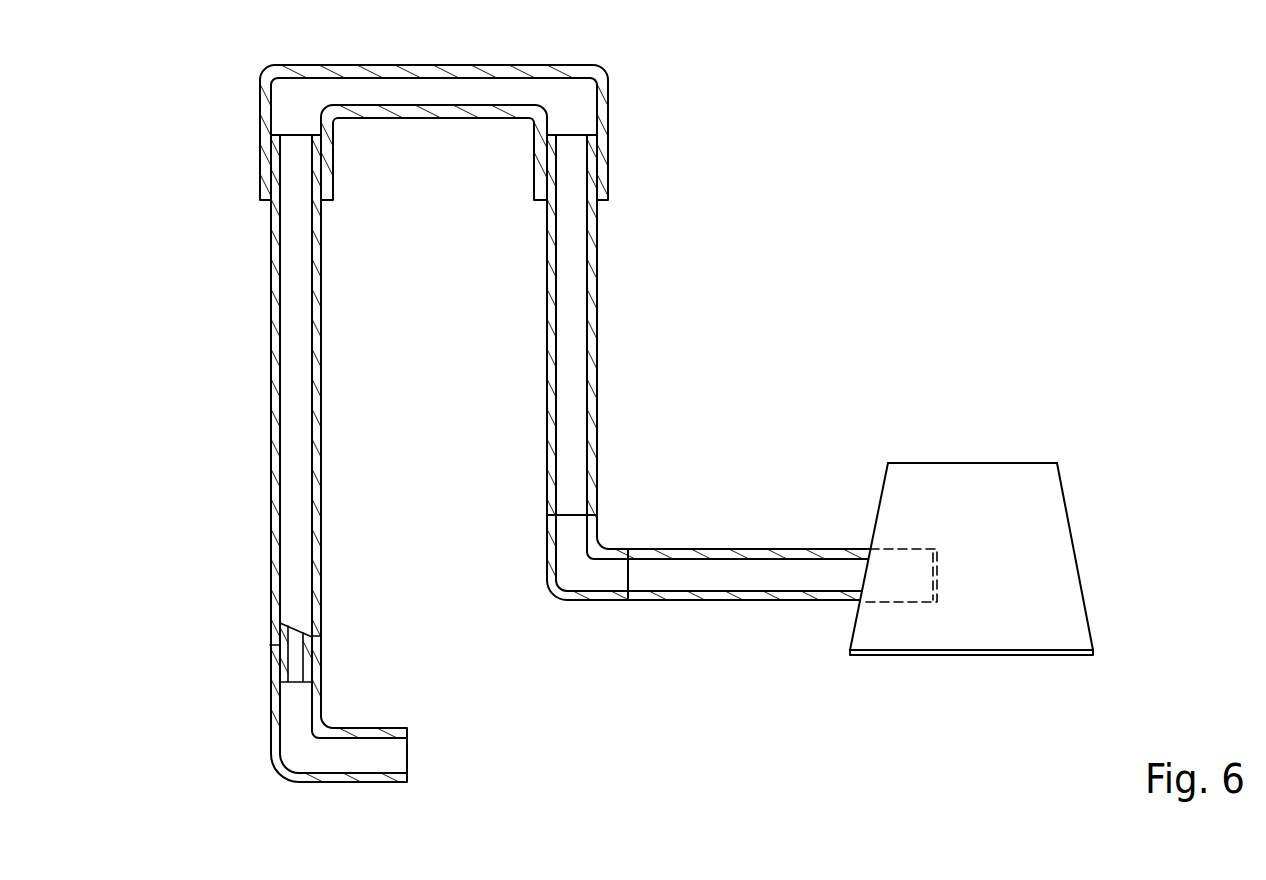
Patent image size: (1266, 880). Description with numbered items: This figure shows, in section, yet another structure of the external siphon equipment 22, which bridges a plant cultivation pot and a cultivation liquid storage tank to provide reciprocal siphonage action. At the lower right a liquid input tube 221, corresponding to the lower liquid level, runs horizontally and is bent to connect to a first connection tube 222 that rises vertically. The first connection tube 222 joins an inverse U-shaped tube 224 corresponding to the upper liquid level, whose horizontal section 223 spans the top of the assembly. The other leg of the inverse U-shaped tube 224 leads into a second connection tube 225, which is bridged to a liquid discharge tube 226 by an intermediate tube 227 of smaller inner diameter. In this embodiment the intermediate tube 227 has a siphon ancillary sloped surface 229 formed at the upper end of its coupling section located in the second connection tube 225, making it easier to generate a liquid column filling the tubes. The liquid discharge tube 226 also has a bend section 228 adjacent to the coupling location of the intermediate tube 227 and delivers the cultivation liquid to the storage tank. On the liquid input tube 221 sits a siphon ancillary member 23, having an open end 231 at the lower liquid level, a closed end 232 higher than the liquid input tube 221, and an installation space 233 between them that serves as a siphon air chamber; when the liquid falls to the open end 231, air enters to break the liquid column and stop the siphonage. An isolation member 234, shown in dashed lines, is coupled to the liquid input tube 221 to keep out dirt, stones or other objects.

The external siphon equipment 22 is at (506, 440).
The liquid input tube 221 is at (720, 602).
The first connection tube 222 is at (598, 325).
The horizontal section 223 is at (405, 67).
The inverse U-shaped tube 224 is at (614, 154).
The second connection tube 225 is at (268, 282).
The liquid discharge tube 226 is at (269, 687).
The intermediate tube 227 is at (316, 672).
The bend section 228 is at (272, 768).
The siphon ancillary sloped surface 229 is at (297, 625).
The siphon ancillary member 23 is at (1010, 554).
The open end 231 is at (878, 658).
The closed end 232 is at (927, 463).
The installation space 233 is at (1002, 482).
The isolation member 234 is at (938, 575).